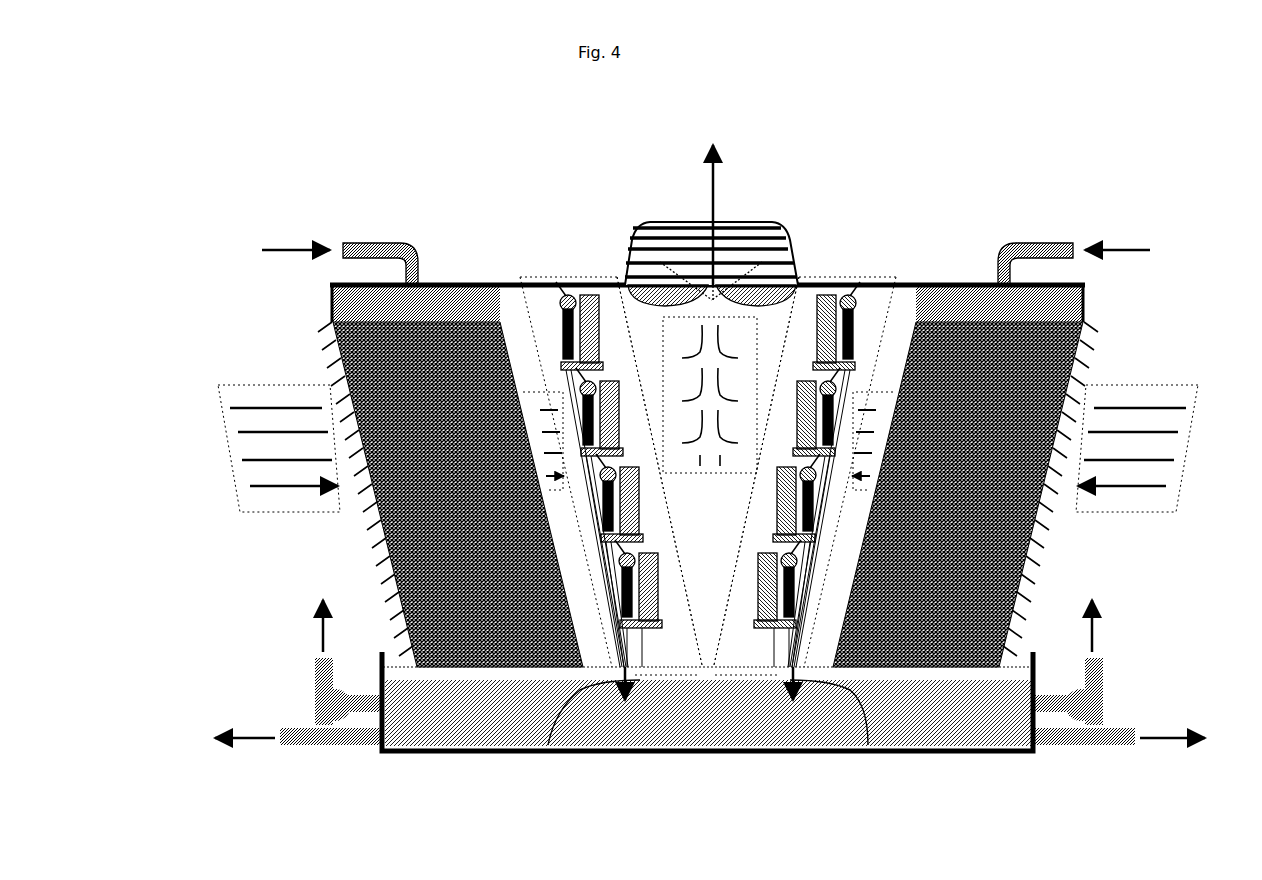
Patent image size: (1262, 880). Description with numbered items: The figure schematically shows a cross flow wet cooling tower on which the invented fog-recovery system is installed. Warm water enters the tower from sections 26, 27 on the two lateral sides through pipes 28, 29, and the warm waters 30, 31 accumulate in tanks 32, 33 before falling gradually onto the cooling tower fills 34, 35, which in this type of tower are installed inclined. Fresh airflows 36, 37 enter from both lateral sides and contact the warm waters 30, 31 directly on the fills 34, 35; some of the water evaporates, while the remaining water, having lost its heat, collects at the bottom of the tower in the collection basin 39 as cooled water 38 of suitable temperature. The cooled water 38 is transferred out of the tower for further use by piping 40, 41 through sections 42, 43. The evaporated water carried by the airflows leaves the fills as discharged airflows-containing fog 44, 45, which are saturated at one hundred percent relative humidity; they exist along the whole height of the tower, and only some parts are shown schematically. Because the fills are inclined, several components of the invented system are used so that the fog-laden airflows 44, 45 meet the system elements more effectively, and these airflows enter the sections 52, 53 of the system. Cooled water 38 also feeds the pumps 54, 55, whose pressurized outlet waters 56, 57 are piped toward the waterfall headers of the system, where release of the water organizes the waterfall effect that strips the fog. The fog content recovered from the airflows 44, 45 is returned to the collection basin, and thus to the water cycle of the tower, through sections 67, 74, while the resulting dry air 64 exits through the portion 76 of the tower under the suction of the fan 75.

The section 26 is at (272, 258).
The section 27 is at (1142, 258).
The pipe 28 is at (392, 243).
The pipe 29 is at (1024, 243).
The warm water 30 is at (442, 298).
The warm water 31 is at (965, 300).
The tank 32 is at (512, 278).
The tank 33 is at (904, 278).
The cooling tower fill 34 is at (380, 525).
The cooling tower fill 35 is at (1040, 525).
The fresh airflow 36 is at (240, 385).
The fresh airflow 37 is at (1176, 385).
The cooled water 38 is at (712, 718).
The collection basin 39 is at (607, 752).
The piping 40 is at (330, 752).
The piping 41 is at (1085, 752).
The section 42 is at (248, 748).
The section 43 is at (1170, 748).
The discharged airflow-containing fog 44 is at (566, 498).
The discharged airflow-containing fog 45 is at (850, 498).
The section 52 is at (680, 592).
The section 53 is at (738, 572).
The pump 54 is at (312, 703).
The pump 55 is at (1104, 703).
The outlet water 56 is at (312, 630).
The outlet water 57 is at (1100, 632).
The dry air 64 is at (712, 480).
The section 67 is at (548, 745).
The section 74 is at (868, 745).
The fan 75 is at (800, 262).
The portion 76 is at (718, 183).